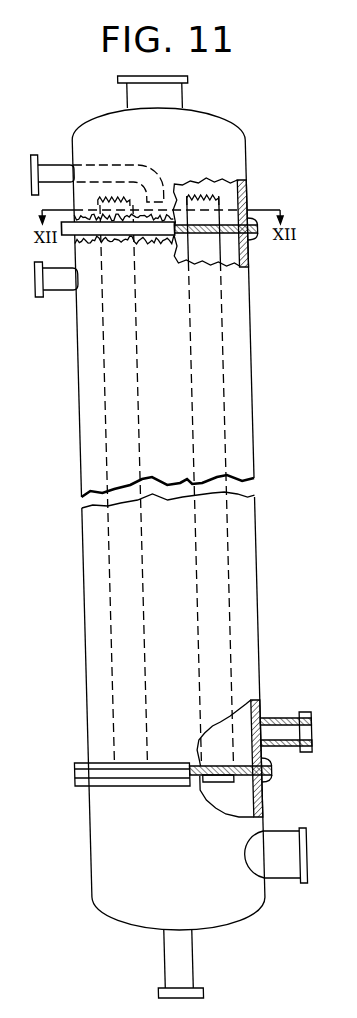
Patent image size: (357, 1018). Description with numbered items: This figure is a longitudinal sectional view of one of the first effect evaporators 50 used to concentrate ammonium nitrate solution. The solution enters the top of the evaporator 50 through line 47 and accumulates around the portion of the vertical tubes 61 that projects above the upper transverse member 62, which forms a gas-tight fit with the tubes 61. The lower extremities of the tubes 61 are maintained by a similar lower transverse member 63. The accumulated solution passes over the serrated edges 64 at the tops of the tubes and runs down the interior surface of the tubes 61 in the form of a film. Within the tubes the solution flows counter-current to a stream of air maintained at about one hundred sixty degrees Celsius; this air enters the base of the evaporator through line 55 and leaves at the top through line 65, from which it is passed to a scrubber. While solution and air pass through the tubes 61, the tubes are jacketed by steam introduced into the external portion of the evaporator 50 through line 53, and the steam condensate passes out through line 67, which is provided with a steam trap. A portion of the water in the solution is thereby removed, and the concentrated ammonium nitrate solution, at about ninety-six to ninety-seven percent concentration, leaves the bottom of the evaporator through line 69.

The line 47 is at (58, 165).
The evaporator 50 is at (252, 150).
The line 53 is at (67, 291).
The line 55 is at (273, 832).
The tubes 61 is at (166, 474).
The transverse member 62 is at (258, 237).
The transverse member 63 is at (263, 770).
The serrated edges 64 is at (206, 196).
The line 65 is at (190, 96).
The line 67 is at (257, 718).
The line 69 is at (150, 964).